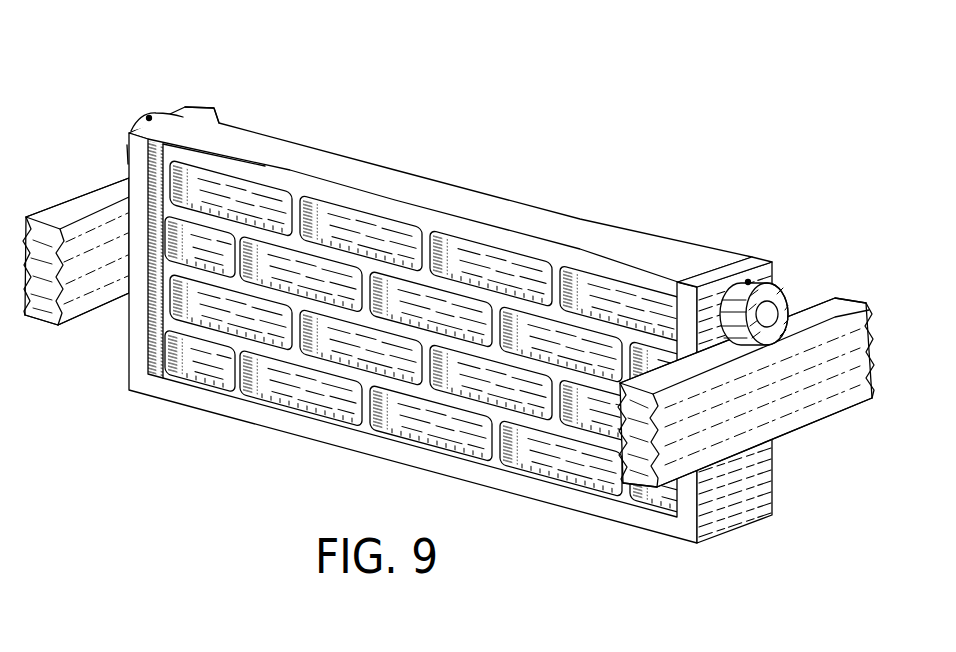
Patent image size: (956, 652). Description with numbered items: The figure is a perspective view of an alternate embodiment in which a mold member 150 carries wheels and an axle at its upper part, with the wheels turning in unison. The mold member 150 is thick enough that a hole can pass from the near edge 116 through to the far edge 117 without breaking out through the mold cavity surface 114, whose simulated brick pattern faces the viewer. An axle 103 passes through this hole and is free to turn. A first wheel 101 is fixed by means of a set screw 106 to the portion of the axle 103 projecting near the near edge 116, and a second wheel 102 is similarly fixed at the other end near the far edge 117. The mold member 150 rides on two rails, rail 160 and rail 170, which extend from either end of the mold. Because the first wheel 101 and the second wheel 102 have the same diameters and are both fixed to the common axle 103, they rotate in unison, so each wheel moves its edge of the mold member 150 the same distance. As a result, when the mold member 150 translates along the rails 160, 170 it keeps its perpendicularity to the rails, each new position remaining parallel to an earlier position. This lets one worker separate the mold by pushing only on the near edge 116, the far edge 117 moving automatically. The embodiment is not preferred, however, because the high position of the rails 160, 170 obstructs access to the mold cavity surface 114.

The first wheel 101 is at (775, 300).
The second wheel 102 is at (135, 122).
The axle 103 is at (784, 297).
The set screw 106 is at (748, 280).
The mold cavity surface 114 is at (424, 240).
The near edge 116 is at (708, 330).
The far edge 117 is at (180, 108).
The mold member 150 is at (430, 190).
The rail 160 is at (797, 392).
The rail 170 is at (84, 288).